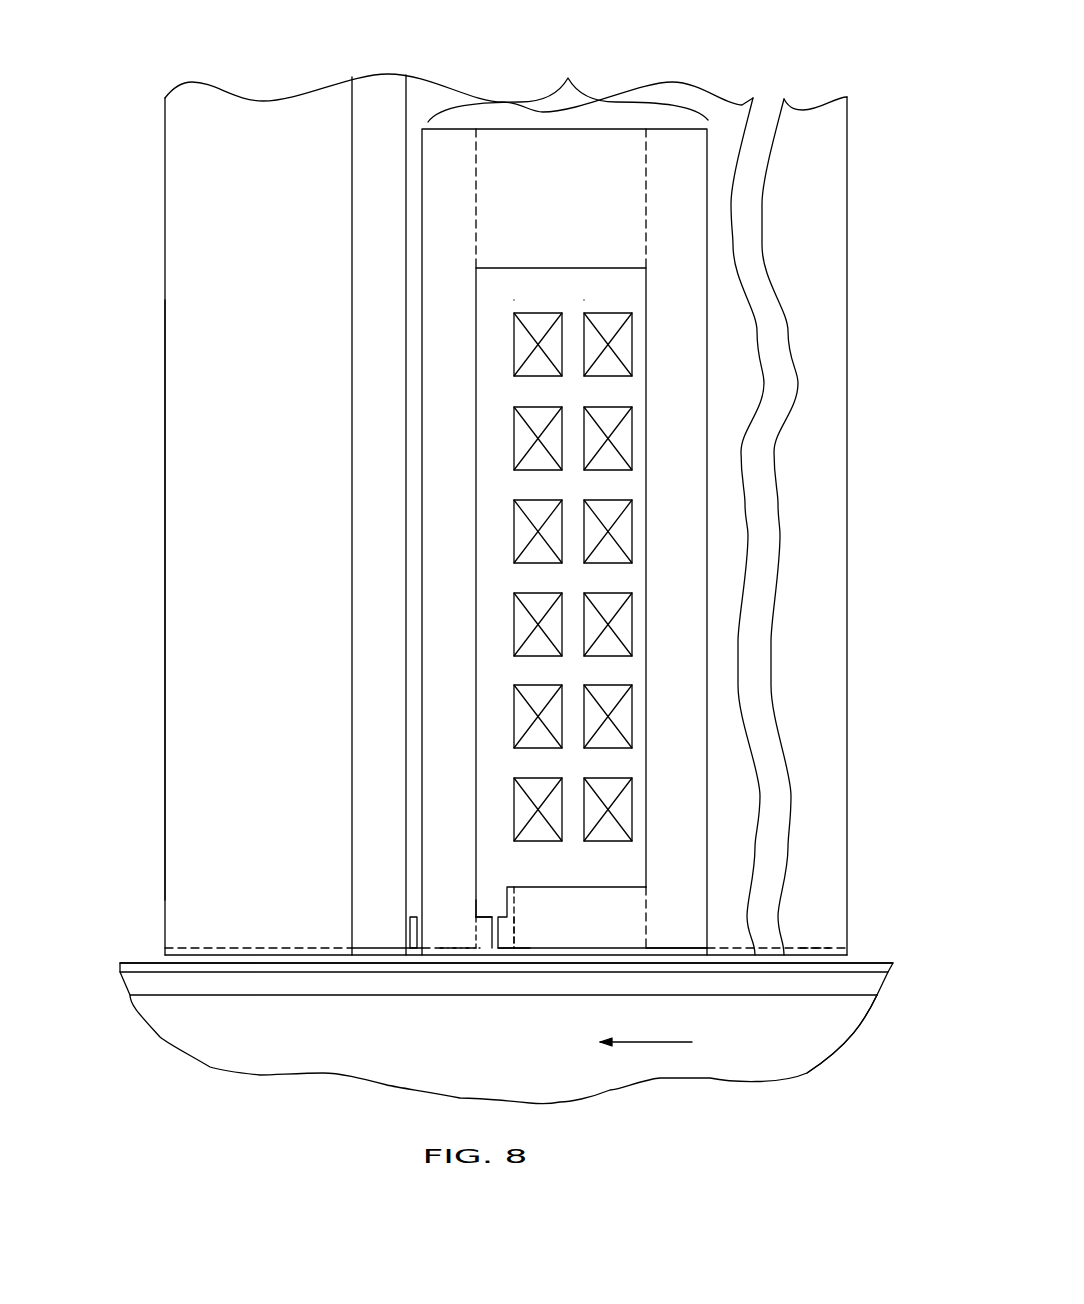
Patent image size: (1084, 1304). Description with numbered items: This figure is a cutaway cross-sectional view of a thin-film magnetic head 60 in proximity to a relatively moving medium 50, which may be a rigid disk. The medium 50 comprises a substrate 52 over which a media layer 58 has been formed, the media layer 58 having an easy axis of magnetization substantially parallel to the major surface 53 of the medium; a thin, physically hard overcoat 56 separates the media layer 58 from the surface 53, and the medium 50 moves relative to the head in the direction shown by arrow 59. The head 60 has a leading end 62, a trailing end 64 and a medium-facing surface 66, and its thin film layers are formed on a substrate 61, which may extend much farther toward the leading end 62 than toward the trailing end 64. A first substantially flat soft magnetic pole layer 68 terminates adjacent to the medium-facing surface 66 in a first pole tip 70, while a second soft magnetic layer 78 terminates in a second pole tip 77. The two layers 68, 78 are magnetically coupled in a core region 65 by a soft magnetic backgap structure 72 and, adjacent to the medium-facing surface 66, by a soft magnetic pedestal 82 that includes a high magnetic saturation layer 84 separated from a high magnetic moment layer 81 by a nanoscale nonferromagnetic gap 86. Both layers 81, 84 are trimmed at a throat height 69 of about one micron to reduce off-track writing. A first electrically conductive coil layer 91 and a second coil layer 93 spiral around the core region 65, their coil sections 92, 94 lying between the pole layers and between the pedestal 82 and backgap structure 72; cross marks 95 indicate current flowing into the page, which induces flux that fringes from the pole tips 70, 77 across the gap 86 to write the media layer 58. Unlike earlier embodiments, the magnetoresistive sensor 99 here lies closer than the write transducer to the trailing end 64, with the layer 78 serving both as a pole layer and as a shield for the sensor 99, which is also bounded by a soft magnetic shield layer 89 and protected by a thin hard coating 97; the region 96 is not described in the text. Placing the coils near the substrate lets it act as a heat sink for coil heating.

The medium 50 is at (810, 1088).
The substrate 52 is at (482, 1069).
The major surface 53 is at (879, 961).
The overcoat 56 is at (748, 967).
The media layer 58 is at (258, 987).
The arrow 59 is at (645, 1043).
The magnetic head 60 is at (182, 75).
The substrate 61 is at (715, 392).
The leading end 62 is at (860, 718).
The trailing end 64 is at (158, 714).
The core region 65 is at (565, 503).
The medium-facing surface 66 is at (197, 956).
The first soft magnetic pole layer 68 is at (664, 622).
The throat height 69 is at (522, 917).
The first pole tip 70 is at (513, 949).
The soft magnetic backgap structure 72 is at (555, 187).
The second pole tip 77 is at (460, 949).
The second soft magnetic layer 78 is at (436, 622).
The high magnetic moment layer 81 is at (492, 917).
The soft magnetic pedestal 82 is at (579, 932).
The high magnetic saturation layer 84 is at (514, 902).
The nonferromagnetic gap 86 is at (488, 932).
The soft magnetic shield layer 89 is at (366, 765).
The first electrically conductive coil layer 91 is at (606, 290).
The coil sections 92 is at (632, 732).
The second electrically conductive coil layer 93 is at (537, 290).
The coil sections 94 is at (514, 458).
The cross marks 95 is at (615, 452).
The left body region 96 is at (209, 590).
The hard coating 97 is at (815, 951).
The magnetoresistive sensor 99 is at (412, 925).